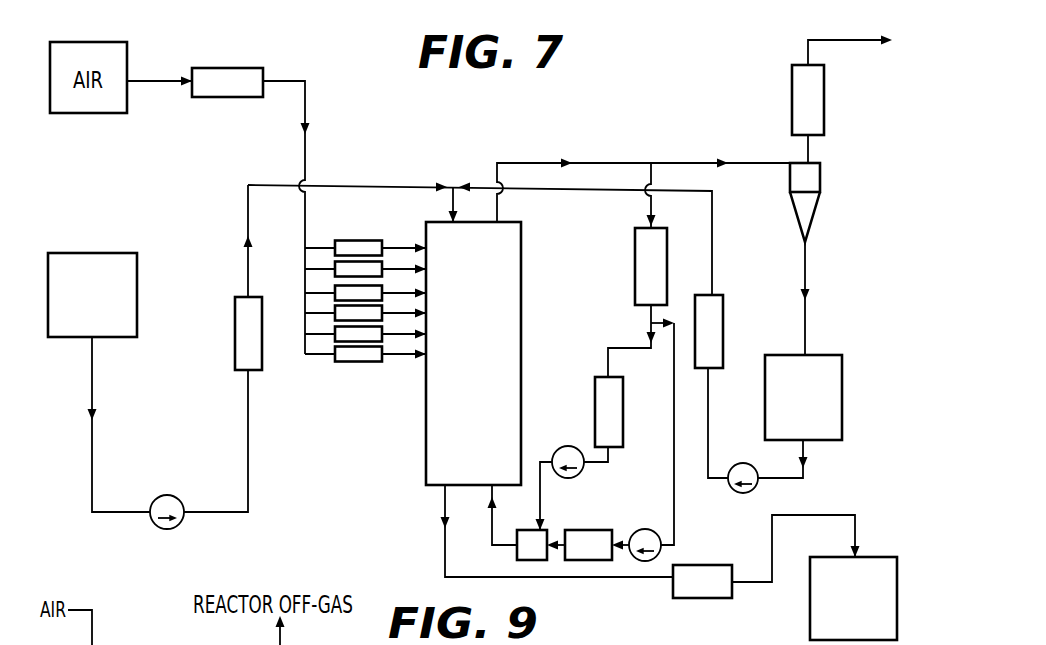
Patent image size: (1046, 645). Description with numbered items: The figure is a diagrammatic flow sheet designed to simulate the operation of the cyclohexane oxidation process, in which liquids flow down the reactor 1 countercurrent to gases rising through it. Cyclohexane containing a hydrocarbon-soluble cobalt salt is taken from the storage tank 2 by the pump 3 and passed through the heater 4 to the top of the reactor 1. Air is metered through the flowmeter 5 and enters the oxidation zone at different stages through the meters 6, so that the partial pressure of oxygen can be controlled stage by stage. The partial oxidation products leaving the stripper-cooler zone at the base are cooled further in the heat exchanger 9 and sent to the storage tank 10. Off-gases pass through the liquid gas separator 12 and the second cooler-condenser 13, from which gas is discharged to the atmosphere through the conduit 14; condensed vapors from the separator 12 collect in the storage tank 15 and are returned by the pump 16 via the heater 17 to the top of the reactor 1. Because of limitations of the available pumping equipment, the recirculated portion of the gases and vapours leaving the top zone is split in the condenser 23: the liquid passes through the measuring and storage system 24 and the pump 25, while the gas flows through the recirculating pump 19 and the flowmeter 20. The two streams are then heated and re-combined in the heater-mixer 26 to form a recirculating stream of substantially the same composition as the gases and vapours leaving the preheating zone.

The reactor 1 is at (465, 348).
The storage tank 2 is at (81, 306).
The pump 3 is at (178, 499).
The heater 4 is at (241, 351).
The flowmeter 5 is at (220, 96).
The meters 6 is at (348, 277).
The heat exchanger 9 is at (695, 593).
The storage tank 10 is at (842, 612).
The liquid gas separator 12 is at (795, 190).
The second cooler-condenser 13 is at (798, 114).
The conduit 14 is at (860, 47).
The storage tank 15 is at (792, 412).
The pump 16 is at (743, 463).
The heater 17 is at (699, 344).
The recirculating pump 19 is at (648, 529).
The flowmeter 20 is at (577, 558).
The condenser 23 is at (640, 279).
The measuring and storage system 24 is at (598, 424).
The pump 25 is at (569, 446).
The heater-mixer 26 is at (521, 558).